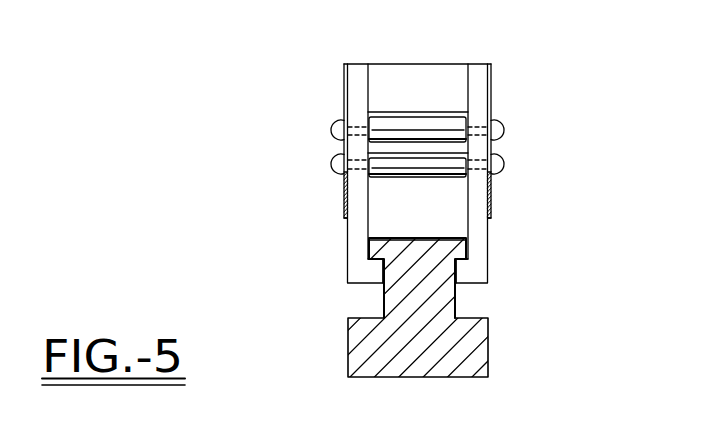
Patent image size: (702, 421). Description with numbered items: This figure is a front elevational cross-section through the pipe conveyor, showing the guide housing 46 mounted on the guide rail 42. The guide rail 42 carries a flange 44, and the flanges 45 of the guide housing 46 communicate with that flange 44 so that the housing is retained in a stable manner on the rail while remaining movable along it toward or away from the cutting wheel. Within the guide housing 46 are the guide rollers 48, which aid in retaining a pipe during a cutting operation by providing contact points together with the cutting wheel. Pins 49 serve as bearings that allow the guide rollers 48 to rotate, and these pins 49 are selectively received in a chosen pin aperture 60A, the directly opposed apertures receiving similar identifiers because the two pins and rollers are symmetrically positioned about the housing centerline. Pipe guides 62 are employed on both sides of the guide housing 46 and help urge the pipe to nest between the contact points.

The guide rail 42 is at (489, 356).
The flange 44 is at (466, 248).
The flanges 45 is at (372, 284).
The guide housing 46 is at (418, 63).
The guide rollers 48 is at (448, 121).
The pins 49 is at (336, 125).
The pin aperture 60A is at (343, 118).
The pipe guides 62 is at (343, 208).